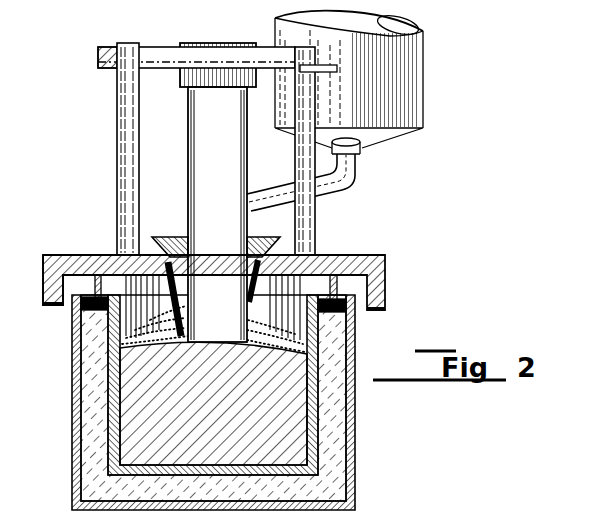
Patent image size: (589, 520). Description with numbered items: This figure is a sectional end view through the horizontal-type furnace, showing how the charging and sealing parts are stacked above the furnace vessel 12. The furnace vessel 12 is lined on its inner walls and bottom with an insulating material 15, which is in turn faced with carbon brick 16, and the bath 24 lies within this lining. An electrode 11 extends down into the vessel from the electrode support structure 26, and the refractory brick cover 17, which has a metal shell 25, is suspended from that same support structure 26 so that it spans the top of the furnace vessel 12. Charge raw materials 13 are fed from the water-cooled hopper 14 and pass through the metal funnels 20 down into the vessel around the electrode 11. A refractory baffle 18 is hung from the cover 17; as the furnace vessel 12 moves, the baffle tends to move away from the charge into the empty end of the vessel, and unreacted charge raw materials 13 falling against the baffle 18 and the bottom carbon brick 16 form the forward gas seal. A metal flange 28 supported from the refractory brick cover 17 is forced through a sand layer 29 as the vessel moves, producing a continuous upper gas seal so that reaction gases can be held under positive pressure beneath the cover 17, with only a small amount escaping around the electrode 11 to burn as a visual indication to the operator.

The electrode 11 is at (188, 108).
The furnace vessel 12 is at (75, 347).
The charge raw materials 13 is at (300, 335).
The water-cooled hopper 14 is at (424, 62).
The insulating material 15 is at (90, 380).
The carbon brick 16 is at (108, 440).
The refractory brick cover 17 is at (52, 280).
The refractory baffle 18 is at (133, 302).
The metal funnel 20 is at (178, 236).
The molten metal bath 24 is at (300, 432).
The metal shell 25 is at (87, 255).
The electrode support structure 26 is at (117, 58).
The metal flange 28 is at (63, 258).
The sand layer 29 is at (62, 303).